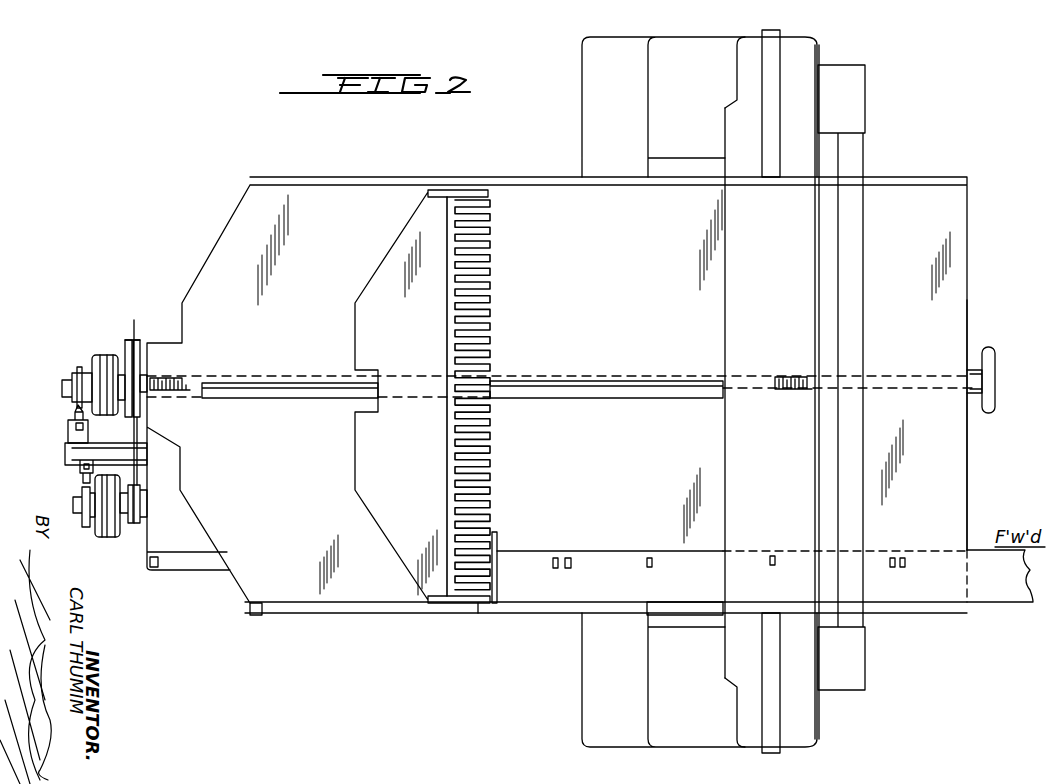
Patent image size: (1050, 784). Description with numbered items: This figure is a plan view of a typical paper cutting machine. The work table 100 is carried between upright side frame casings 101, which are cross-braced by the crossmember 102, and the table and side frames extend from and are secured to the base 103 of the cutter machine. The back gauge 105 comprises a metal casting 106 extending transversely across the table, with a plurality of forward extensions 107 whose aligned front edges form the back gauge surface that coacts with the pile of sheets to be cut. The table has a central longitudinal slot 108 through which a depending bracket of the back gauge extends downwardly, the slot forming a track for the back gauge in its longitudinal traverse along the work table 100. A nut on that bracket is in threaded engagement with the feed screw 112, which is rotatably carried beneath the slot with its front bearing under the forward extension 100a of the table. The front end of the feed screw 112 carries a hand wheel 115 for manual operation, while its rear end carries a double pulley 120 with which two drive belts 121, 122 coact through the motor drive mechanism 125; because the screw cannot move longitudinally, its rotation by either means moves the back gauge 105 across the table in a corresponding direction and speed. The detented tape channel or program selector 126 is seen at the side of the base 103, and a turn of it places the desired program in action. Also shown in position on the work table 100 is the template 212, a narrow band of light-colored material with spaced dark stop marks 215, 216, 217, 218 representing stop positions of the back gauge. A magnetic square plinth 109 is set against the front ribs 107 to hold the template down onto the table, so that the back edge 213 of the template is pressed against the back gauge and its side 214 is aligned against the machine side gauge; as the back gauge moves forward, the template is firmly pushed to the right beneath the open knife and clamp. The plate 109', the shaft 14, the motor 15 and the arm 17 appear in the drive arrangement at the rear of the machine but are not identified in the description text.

The work table 100 is at (296, 540).
The forward extension of table 100a is at (953, 477).
The upright side frame casing 101 is at (757, 137).
The crossmember 102 is at (790, 522).
The base 103 is at (622, 124).
The back gauge 105 is at (440, 509).
The metal casting 106 is at (420, 331).
The forward extensions 107 is at (493, 248).
The central longitudinal slot 108 is at (285, 393).
The magnetic square plinth 109 is at (765, 627).
The upright plate 109' is at (525, 561).
The feed screw 112 is at (177, 380).
The hand wheel 115 is at (990, 403).
The double pulley 120 is at (138, 348).
The drive belt 121 is at (140, 410).
The drive belt 122 is at (125, 345).
The motor drive mechanism 125 is at (60, 437).
The tape channel or program selector 126 is at (862, 213).
The motor shaft 14 is at (129, 415).
The motor 15 is at (135, 537).
The mounting arm 17 is at (142, 460).
The template 212 is at (597, 541).
The back edge of template 213 is at (480, 606).
The side of template 214 is at (563, 601).
The stop mark 215 is at (648, 563).
The stop mark 216 is at (768, 565).
The stop mark 217 is at (893, 557).
The stop mark 218 is at (905, 563).